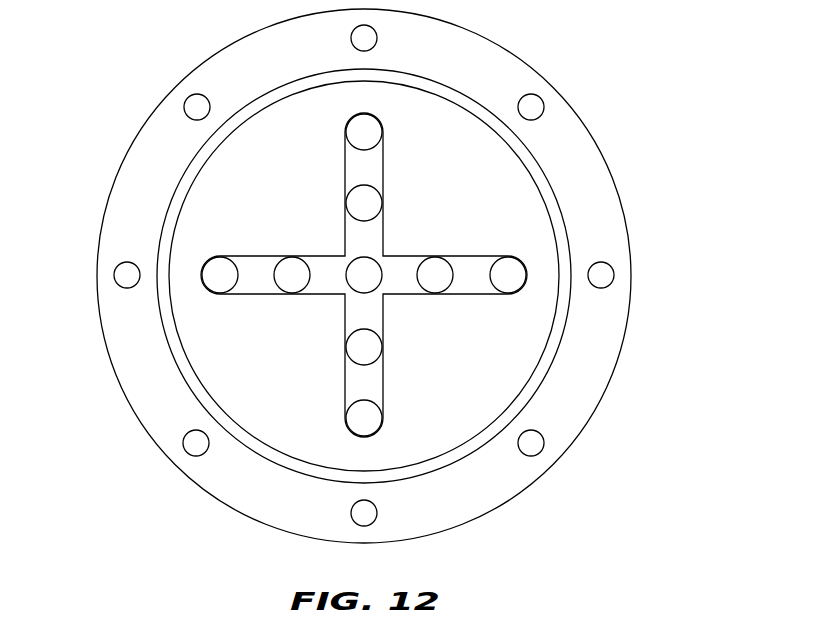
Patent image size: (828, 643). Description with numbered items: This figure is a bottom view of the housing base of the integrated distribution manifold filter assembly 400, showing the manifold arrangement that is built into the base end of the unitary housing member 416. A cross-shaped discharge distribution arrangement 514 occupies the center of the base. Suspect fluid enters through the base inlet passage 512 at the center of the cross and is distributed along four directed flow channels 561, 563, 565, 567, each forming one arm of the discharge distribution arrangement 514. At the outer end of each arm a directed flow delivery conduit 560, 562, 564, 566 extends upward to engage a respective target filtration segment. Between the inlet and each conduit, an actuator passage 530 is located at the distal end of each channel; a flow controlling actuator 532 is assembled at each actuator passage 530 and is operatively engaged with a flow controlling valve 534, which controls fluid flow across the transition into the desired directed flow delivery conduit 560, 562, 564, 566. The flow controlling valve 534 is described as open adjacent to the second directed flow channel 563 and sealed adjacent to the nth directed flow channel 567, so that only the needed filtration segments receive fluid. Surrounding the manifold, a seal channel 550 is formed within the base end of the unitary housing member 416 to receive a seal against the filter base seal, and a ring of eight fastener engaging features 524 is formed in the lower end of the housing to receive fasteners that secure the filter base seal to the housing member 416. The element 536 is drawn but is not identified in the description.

The integrated distribution manifold filter assembly 400 is at (636, 104).
The unitary housing member 416 is at (588, 368).
The seal channel 550 is at (556, 200).
The fastener engaging feature 524 is at (186, 97).
The discharge distribution arrangement 514 is at (346, 235).
The base inlet passage 512 is at (382, 275).
The directed flow delivery conduit 560 is at (346, 130).
The directed flow channel 561 is at (346, 172).
The actuator passage 530 is at (346, 203).
The flow controlling actuator 532 is at (437, 256).
The second directed flow channel 563 is at (463, 256).
The directed flow delivery conduit 562 is at (528, 262).
The flow controlling valve 534 is at (383, 353).
The directed flow channel 565 is at (383, 383).
The directed flow delivery conduit 564 is at (383, 422).
The left intermediate bore 536 is at (300, 295).
The nth directed flow channel 567 is at (262, 295).
The directed flow delivery conduit 566 is at (203, 292).